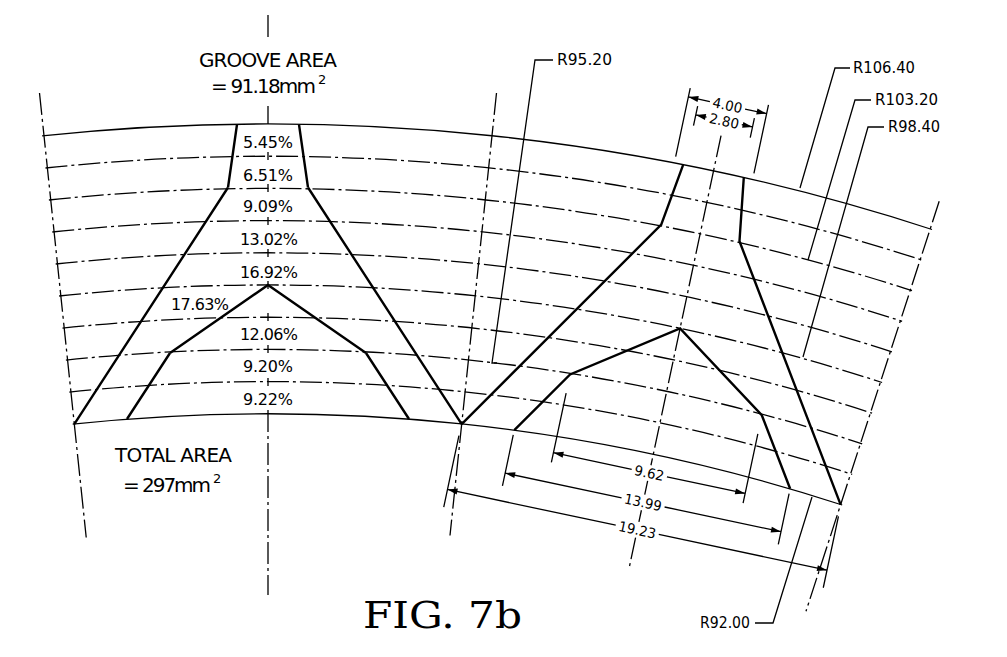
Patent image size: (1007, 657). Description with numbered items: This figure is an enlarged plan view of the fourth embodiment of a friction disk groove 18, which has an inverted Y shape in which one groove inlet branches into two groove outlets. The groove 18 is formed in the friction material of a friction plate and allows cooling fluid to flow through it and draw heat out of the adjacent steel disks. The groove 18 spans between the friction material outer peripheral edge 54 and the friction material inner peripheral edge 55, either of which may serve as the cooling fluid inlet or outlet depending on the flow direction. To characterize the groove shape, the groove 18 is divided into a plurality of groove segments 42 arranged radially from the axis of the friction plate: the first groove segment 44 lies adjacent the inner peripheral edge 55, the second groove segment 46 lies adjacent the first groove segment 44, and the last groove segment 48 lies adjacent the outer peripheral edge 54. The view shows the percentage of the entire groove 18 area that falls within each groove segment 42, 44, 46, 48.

The groove 18 is at (225, 512).
The groove segment 42 is at (188, 246).
The first groove segment 44 is at (76, 407).
The second groove segment 46 is at (104, 377).
The last groove segment 48 is at (236, 136).
The friction material outer peripheral edge 54 is at (213, 124).
The friction material inner peripheral edge 55 is at (400, 423).